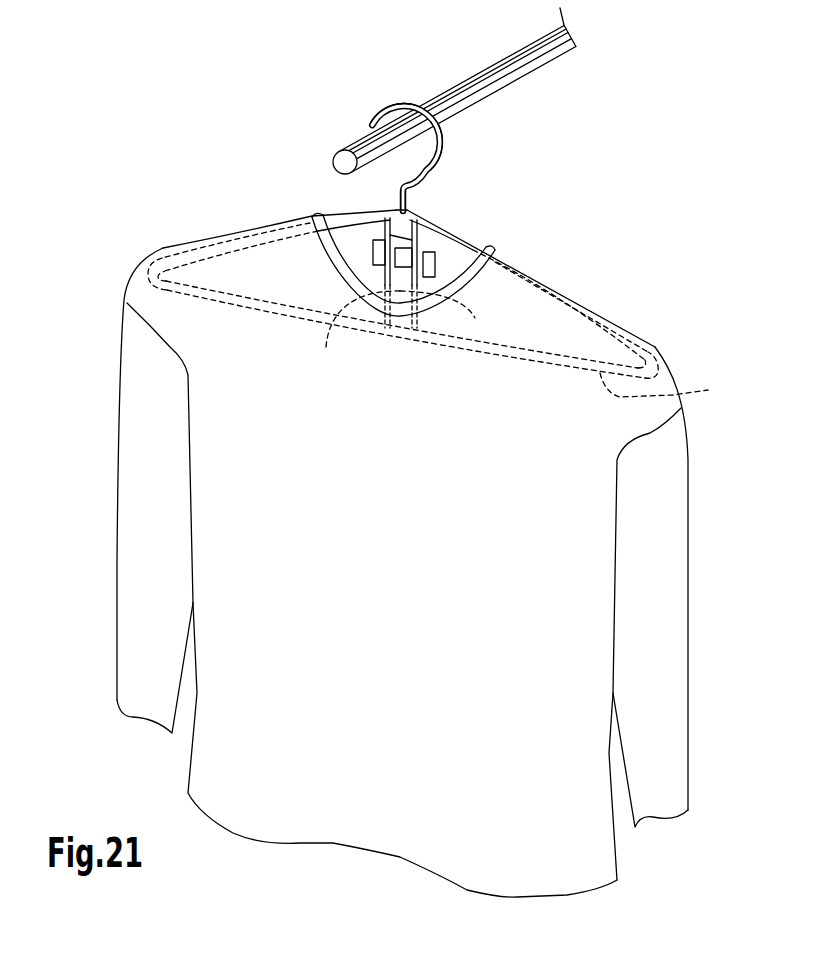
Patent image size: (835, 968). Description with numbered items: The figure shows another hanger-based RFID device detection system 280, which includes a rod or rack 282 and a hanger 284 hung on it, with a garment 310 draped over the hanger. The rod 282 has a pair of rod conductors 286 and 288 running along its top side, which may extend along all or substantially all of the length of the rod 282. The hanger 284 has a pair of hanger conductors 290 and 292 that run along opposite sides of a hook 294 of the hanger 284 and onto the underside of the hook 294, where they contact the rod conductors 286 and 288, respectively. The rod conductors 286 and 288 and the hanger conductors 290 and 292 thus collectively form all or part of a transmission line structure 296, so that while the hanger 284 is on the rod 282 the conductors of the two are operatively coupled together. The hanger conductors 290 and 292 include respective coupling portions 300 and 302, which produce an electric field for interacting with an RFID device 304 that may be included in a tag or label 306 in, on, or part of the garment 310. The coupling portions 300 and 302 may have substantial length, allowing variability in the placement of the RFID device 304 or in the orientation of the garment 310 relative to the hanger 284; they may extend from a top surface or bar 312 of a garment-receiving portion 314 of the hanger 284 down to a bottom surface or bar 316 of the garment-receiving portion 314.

The system 280 is at (295, 112).
The rod or rack 282 is at (313, 150).
The hanger 284 is at (442, 173).
The rod conductor 286 is at (482, 72).
The rod conductor 288 is at (527, 68).
The hanger conductor 290 is at (400, 105).
The hanger conductor 292 is at (398, 197).
The hook 294 is at (447, 140).
The transmission line structure 296 is at (408, 100).
The coupling portion 300 is at (355, 331).
The coupling portion 302 is at (455, 313).
The RFID device 304 is at (410, 258).
The tag or label 306 is at (482, 277).
The garment 310 is at (137, 468).
The top surface or bar 312 is at (548, 290).
The garment-receiving portion 314 is at (652, 333).
The bottom surface or bar 316 is at (675, 377).